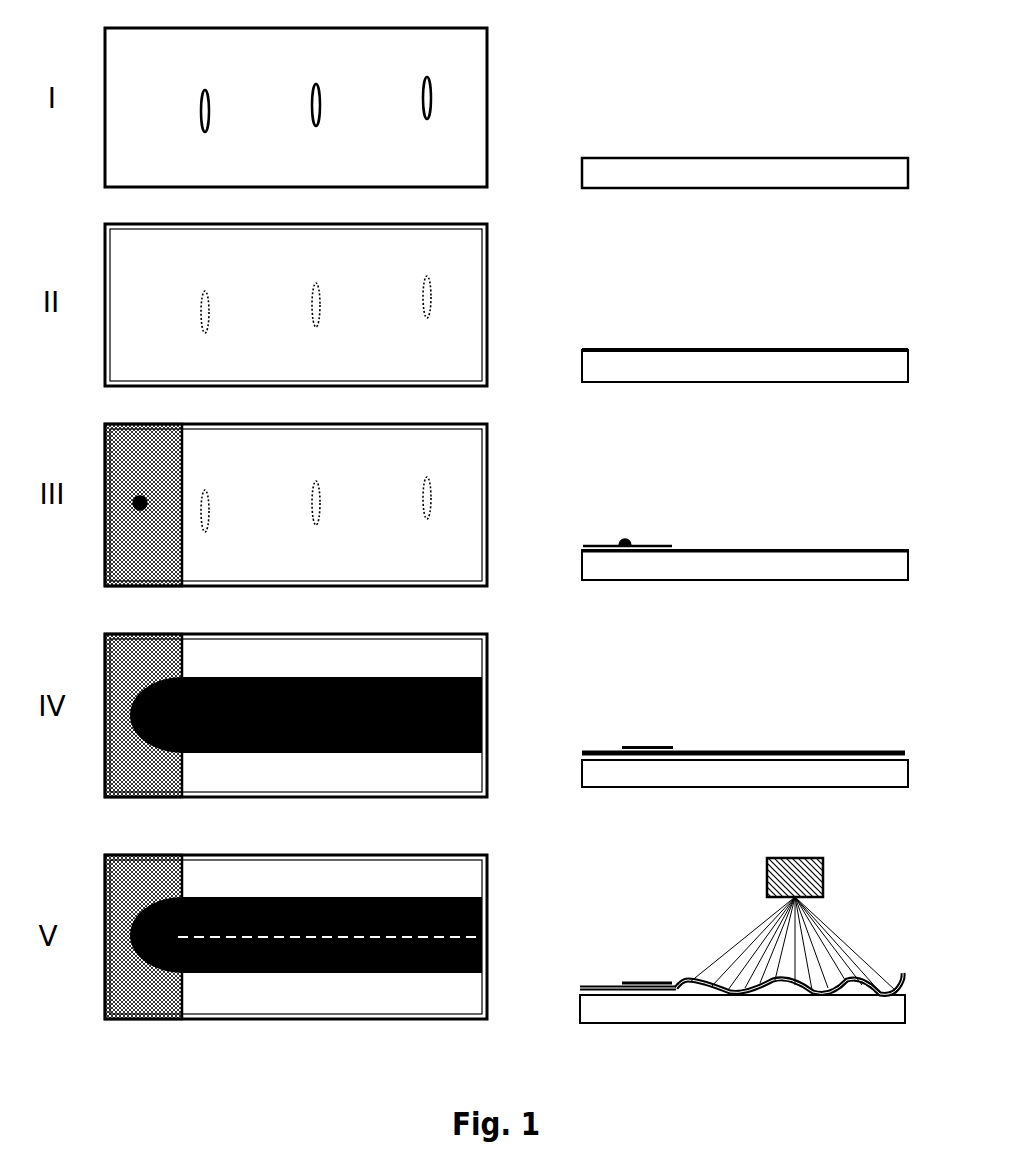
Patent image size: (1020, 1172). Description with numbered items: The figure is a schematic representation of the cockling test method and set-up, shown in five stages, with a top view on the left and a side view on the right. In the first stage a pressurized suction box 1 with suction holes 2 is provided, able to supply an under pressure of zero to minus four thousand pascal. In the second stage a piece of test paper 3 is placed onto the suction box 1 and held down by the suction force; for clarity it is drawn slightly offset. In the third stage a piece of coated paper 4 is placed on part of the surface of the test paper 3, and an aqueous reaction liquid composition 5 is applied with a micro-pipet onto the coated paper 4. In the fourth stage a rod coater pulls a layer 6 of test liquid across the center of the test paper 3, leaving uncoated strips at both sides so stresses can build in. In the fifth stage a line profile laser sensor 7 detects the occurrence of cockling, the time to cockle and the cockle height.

The pressurized suction box 1 is at (473, 158).
The suction holes 2 is at (207, 90).
The test paper 3 is at (488, 282).
The coated paper 4 is at (168, 468).
The aqueous reaction liquid composition 5 is at (140, 510).
The layer of test liquid 6 is at (487, 702).
The line profile laser sensor 7 is at (767, 873).